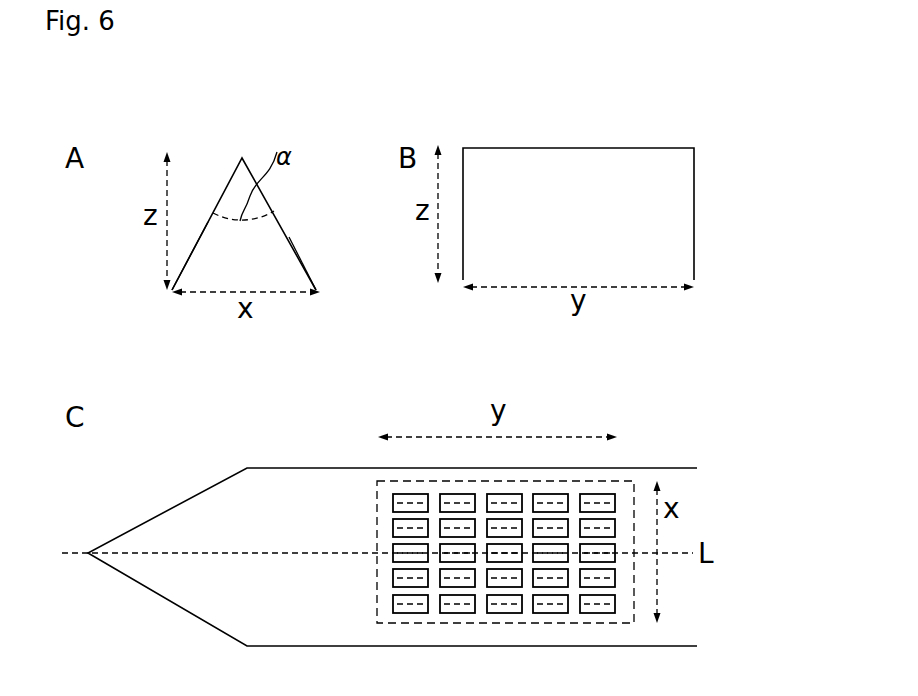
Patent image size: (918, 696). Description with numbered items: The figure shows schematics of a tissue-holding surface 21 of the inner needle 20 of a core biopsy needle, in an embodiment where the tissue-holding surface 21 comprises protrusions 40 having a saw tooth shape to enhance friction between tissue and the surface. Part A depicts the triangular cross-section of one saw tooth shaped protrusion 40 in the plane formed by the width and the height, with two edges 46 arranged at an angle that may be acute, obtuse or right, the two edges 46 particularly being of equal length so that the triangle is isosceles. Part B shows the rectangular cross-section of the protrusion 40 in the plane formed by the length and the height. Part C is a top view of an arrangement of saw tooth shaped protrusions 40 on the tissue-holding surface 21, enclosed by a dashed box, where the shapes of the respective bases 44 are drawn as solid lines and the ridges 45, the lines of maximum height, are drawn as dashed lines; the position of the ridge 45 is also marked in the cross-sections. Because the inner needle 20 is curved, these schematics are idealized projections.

The inner needle 20 is at (323, 468).
The tissue-holding surface 21 is at (577, 527).
The protrusions 40 is at (505, 496).
The bases 44 is at (476, 503).
The ridge 45 is at (242, 158).
The edges 46 is at (208, 222).